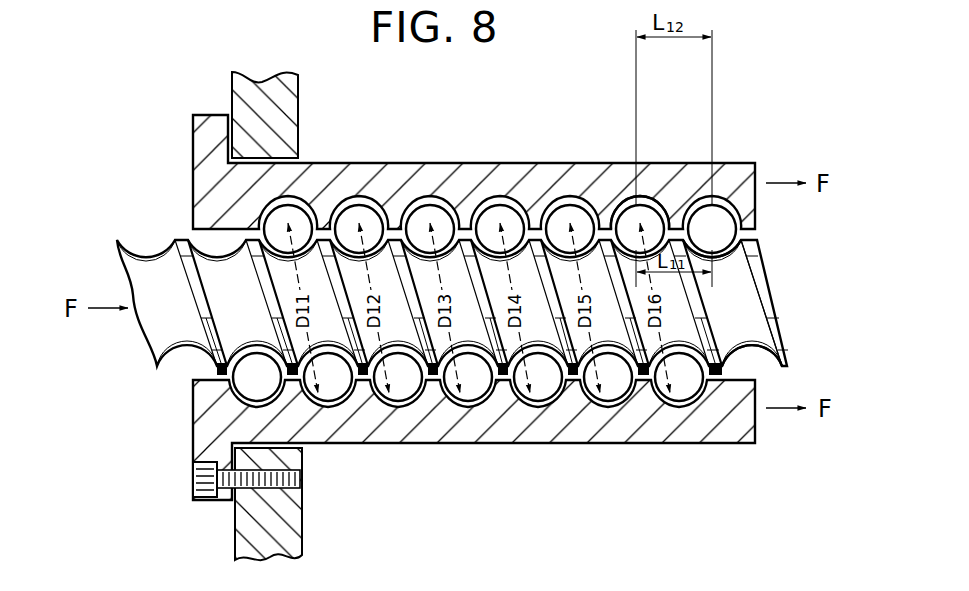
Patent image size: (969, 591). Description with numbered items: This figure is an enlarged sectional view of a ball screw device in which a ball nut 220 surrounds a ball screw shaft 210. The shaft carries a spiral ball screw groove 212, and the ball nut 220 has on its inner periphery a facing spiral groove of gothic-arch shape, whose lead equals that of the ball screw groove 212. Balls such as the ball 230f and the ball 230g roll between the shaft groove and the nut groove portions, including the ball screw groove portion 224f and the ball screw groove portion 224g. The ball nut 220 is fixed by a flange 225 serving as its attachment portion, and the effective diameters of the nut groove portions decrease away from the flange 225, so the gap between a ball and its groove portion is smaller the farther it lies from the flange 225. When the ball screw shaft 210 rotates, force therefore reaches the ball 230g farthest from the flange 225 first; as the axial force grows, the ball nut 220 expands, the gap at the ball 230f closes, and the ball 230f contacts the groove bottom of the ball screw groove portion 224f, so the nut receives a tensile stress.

The ball nut 220 is at (493, 146).
The ball screw groove portion 224f is at (642, 206).
The ball screw groove portion 224g is at (714, 206).
The ball 230f is at (622, 212).
The ball 230g is at (742, 258).
The ball screw shaft 210 is at (793, 303).
The ball screw groove 212 is at (767, 358).
The flange 225 is at (197, 438).